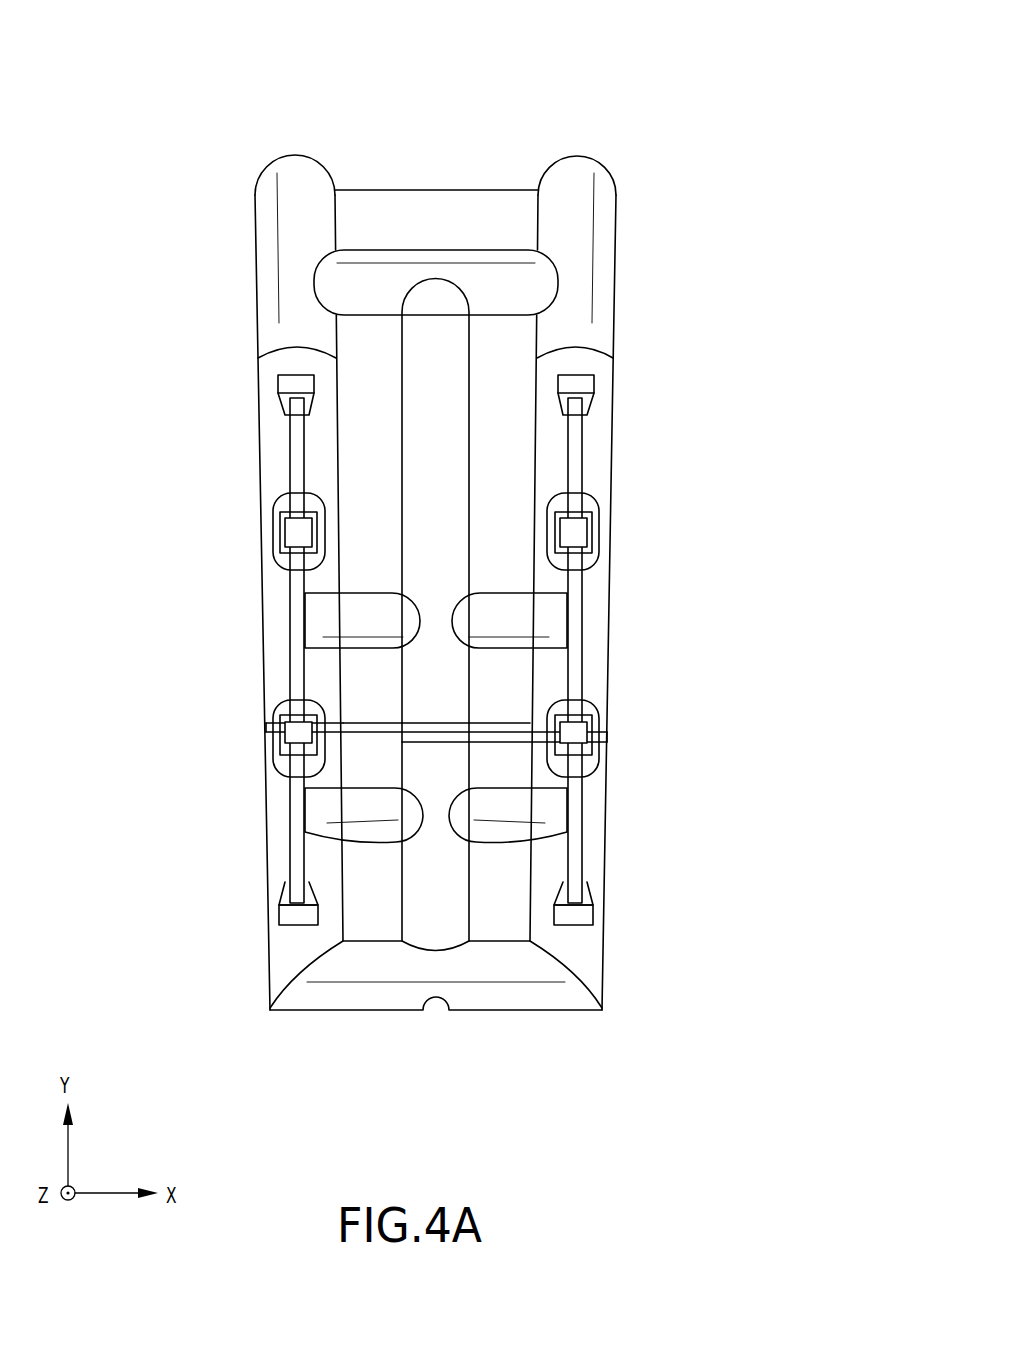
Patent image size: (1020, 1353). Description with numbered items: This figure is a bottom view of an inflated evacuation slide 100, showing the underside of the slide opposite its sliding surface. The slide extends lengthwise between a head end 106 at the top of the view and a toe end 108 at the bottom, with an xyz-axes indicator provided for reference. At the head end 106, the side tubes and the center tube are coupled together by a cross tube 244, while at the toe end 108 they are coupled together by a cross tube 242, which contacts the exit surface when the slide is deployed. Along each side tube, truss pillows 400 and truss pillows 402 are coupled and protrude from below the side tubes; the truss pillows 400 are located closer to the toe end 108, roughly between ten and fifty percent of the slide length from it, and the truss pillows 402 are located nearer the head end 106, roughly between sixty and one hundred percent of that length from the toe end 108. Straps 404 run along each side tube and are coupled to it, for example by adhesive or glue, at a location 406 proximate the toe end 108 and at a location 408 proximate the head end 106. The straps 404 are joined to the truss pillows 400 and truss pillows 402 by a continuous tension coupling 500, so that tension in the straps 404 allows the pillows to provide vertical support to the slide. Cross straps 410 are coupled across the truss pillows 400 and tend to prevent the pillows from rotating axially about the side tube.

The evacuation slide 100 is at (728, 106).
The head end 106 is at (460, 122).
The toe end 108 is at (428, 1032).
The cross tube 242 is at (510, 965).
The cross tube 244 is at (525, 268).
The truss pillows 400 is at (590, 750).
The truss pillows 402 is at (327, 505).
The straps 404 is at (297, 588).
The location 406 is at (310, 912).
The location 408 is at (308, 400).
The cross straps 410 is at (366, 721).
The continuous tension coupling 500 is at (575, 525).